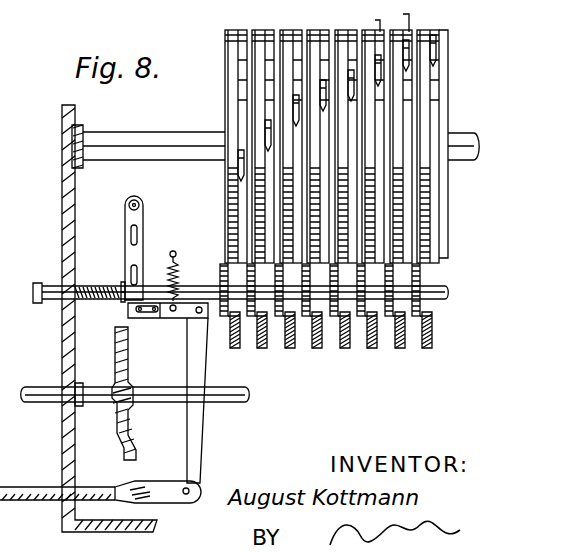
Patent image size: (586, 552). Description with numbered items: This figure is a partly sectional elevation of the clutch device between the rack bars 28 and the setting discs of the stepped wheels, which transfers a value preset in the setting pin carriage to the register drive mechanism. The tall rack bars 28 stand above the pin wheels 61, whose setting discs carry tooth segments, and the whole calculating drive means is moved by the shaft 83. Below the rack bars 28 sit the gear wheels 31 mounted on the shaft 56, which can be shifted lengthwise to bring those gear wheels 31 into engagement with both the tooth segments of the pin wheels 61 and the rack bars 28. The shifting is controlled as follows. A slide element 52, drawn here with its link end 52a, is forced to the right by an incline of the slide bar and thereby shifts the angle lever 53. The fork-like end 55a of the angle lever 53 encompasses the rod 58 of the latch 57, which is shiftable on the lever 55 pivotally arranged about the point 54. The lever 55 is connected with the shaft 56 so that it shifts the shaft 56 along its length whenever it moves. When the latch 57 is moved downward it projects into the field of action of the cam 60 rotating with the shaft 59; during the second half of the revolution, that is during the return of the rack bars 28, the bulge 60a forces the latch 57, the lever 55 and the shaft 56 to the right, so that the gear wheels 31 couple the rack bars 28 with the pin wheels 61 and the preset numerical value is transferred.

The rack bars 28 is at (370, 342).
The gear wheels 31 is at (422, 282).
The slide element 52 is at (18, 488).
The rod link end 52a is at (148, 490).
The angle lever 53 is at (196, 440).
The pivot point 54 is at (140, 200).
The lever 55 is at (127, 210).
The fork-like end 55a is at (137, 313).
The shaft 56 is at (100, 283).
The latch 57 is at (138, 256).
The rod 58 is at (128, 312).
The shaft 59 is at (226, 397).
The cam 60 is at (125, 367).
The bulge 60a is at (135, 445).
The pin wheels 61 is at (428, 215).
The shaft 83 is at (205, 147).